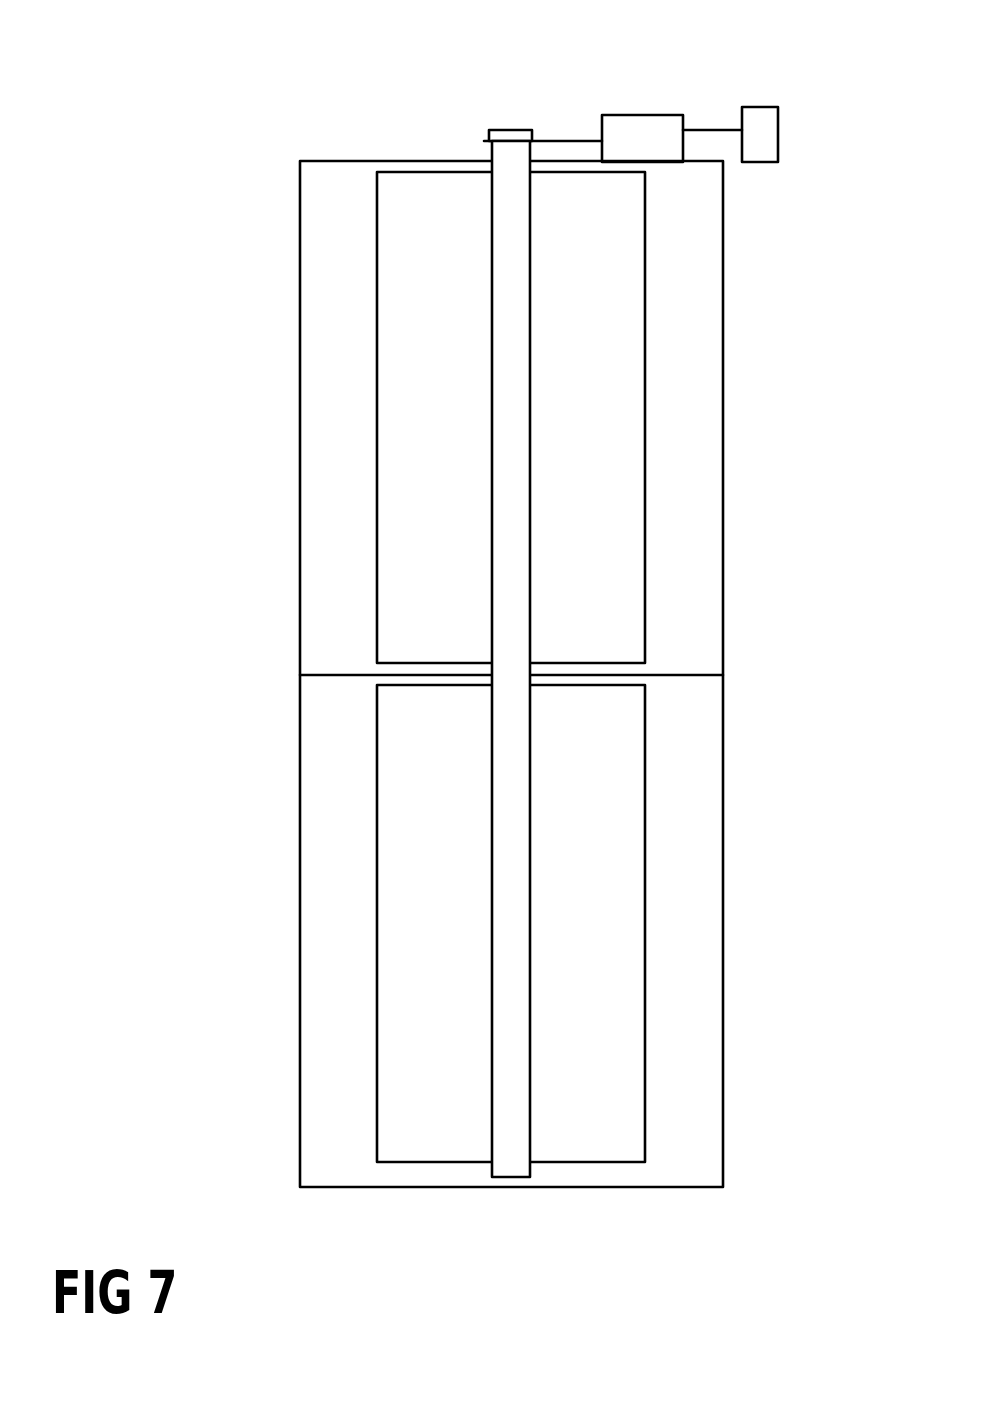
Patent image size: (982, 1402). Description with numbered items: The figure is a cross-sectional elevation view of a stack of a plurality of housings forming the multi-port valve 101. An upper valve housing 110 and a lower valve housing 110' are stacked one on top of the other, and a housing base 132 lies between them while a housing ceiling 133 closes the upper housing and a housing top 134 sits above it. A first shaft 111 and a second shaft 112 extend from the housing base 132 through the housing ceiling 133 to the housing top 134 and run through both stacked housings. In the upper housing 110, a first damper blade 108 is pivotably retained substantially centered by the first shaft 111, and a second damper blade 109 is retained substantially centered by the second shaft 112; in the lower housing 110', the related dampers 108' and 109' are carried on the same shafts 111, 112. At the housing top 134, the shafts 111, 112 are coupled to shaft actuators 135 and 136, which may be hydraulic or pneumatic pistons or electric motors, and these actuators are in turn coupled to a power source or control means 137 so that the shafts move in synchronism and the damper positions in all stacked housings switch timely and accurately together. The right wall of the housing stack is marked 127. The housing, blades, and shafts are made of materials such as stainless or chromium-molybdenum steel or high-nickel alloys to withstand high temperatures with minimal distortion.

The valve 101 is at (513, 593).
The housing ceiling 133 is at (511, 631).
The housing top 134 is at (511, 631).
The shaft actuator 135 is at (664, 101).
The shaft actuator 136 is at (625, 115).
The power source 137 is at (780, 133).
The valve housing 110 is at (511, 631).
The first damper blade 108 is at (355, 417).
The second damper blade 109 is at (670, 417).
The right housing wall 127 is at (511, 674).
The housing base 132 is at (300, 675).
The first shaft 111 is at (678, 653).
The second shaft 112 is at (513, 823).
The valve housing 110' is at (463, 674).
The damper blade 108' is at (345, 923).
The damper blade 109' is at (680, 923).